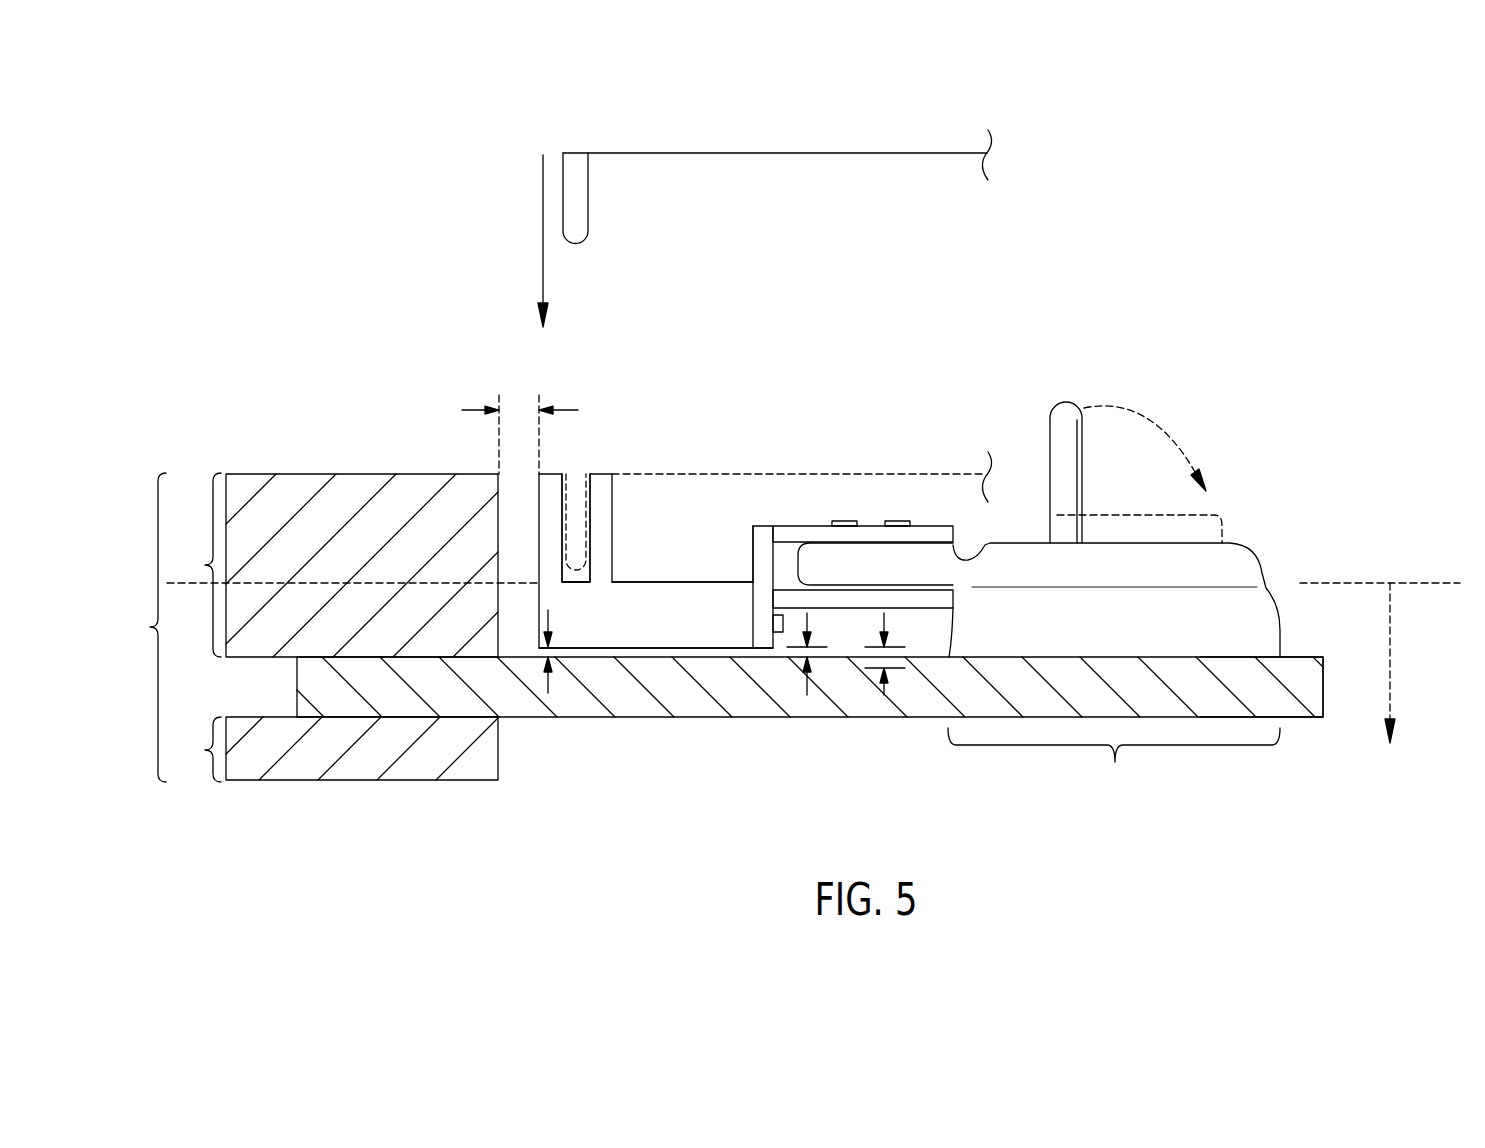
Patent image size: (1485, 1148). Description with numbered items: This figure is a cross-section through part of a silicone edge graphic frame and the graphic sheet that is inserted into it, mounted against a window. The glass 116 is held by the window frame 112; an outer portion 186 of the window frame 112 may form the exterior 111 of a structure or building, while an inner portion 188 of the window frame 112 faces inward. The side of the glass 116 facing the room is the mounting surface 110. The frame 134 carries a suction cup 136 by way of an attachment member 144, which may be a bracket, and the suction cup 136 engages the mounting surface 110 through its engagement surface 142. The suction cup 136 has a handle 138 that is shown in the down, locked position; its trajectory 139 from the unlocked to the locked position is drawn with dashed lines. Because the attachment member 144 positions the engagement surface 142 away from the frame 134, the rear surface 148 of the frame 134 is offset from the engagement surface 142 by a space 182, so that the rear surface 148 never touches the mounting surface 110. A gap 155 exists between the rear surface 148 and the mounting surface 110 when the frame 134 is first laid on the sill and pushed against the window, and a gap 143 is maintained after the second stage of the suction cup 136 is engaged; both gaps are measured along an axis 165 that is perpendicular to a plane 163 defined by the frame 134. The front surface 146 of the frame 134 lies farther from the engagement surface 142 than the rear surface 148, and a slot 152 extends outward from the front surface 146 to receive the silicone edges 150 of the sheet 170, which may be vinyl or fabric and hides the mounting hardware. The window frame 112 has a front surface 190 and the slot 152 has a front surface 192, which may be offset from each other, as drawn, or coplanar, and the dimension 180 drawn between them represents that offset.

The mounting surface 110 is at (1298, 657).
The exterior 111 is at (332, 621).
The window frame 112 is at (135, 627).
The glass 116 is at (1302, 682).
The frame 134 is at (698, 597).
The suction cup 136 is at (1262, 573).
The handle 138 is at (1067, 417).
The trajectory 139 is at (1148, 420).
The engagement surface 142 is at (1114, 764).
The gap 143 is at (807, 688).
The attachment member 144 is at (800, 526).
The front surface 146 is at (637, 582).
The rear surface 148 is at (693, 648).
The silicone edge 150 is at (577, 220).
The slot 152 is at (577, 584).
The gap 155 is at (885, 702).
The plane 163 is at (1423, 582).
The axis 165 is at (1393, 668).
The sheet 170 is at (773, 152).
The gap width 180 is at (518, 400).
The space 182 is at (548, 653).
The outer portion 186 is at (332, 749).
The inner portion 188 is at (352, 565).
The front surface 190 is at (354, 473).
The front surface 192 is at (598, 473).